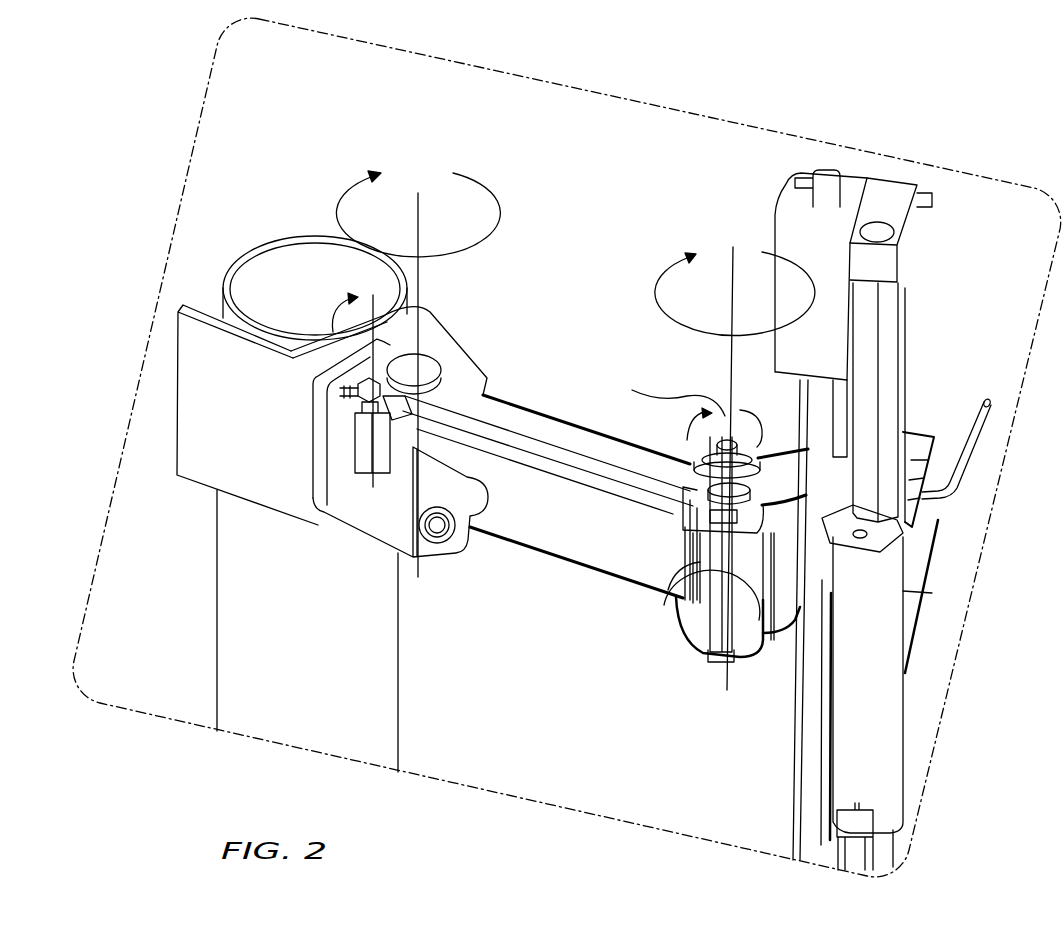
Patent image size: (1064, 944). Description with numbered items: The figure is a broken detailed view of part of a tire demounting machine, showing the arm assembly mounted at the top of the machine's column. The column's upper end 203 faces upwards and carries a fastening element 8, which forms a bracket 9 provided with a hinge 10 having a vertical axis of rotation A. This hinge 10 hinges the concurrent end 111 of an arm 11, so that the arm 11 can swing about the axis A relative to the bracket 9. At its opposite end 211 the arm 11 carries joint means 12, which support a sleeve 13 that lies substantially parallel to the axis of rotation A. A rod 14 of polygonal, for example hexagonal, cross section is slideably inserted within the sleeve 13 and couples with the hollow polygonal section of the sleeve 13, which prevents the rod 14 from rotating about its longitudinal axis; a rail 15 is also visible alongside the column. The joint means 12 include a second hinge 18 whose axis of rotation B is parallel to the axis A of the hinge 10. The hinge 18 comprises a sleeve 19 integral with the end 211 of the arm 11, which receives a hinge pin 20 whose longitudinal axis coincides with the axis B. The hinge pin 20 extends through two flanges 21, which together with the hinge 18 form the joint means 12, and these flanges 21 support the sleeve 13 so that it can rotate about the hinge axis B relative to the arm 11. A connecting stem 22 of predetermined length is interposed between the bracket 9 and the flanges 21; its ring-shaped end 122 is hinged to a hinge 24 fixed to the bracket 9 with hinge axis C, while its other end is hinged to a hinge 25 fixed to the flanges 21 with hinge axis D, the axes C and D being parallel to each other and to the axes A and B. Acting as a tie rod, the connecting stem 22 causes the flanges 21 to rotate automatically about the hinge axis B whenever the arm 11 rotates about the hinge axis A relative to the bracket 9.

The fastening element 8 is at (198, 500).
The bracket 9 is at (390, 510).
The hinge 10 is at (433, 370).
The arm 11 is at (557, 533).
The concurrent end of the arm 111 is at (483, 408).
The joint means 12 is at (672, 522).
The end of the connecting stem 122 is at (365, 418).
The sleeve 13 is at (863, 613).
The rod 14 is at (800, 478).
The rail 15 is at (808, 775).
The second hinge 18 is at (762, 452).
The sleeve of the hinge 19 is at (757, 660).
The hinge pin 20 is at (632, 390).
The flanges 21 is at (788, 627).
The connecting stem 22 is at (537, 448).
The hinge 24 is at (352, 390).
The hinge 25 is at (903, 417).
The upper end of the column 203 is at (233, 257).
The opposite end of the arm 211 is at (700, 617).
The axis of rotation A is at (420, 273).
The axis of rotation B is at (728, 368).
The hinge axis C is at (323, 352).
The hinge axis D is at (700, 530).